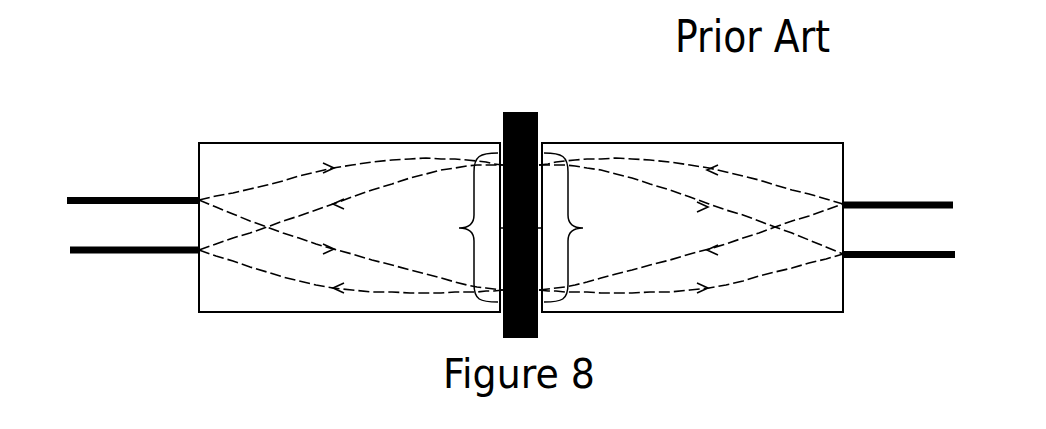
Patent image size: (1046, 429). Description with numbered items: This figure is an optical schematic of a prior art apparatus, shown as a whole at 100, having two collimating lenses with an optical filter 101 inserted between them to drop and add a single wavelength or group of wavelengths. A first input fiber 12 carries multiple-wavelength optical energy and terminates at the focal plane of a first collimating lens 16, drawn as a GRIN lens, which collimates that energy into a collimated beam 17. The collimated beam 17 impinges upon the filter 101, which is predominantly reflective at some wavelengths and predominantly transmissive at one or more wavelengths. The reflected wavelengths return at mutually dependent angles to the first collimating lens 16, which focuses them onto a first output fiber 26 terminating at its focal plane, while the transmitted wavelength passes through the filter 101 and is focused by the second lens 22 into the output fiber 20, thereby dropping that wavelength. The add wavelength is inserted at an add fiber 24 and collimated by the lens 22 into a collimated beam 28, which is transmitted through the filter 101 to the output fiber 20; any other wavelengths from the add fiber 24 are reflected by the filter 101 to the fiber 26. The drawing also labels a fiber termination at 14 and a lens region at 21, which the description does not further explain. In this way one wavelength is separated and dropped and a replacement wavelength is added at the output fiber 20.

The first input fiber 12 is at (134, 188).
The fiber end face 14 is at (198, 192).
The first collimating lens 16 is at (326, 131).
The collimated beam 17 is at (464, 227).
The output fiber 20 is at (146, 240).
The lens body 21 is at (852, 283).
The lens 22 is at (716, 132).
The add fiber 24 is at (931, 192).
The first output fiber 26 is at (935, 245).
The collimated beam 28 is at (576, 227).
The prior art optical filter device 100 is at (831, 126).
The optical filter 101 is at (538, 125).